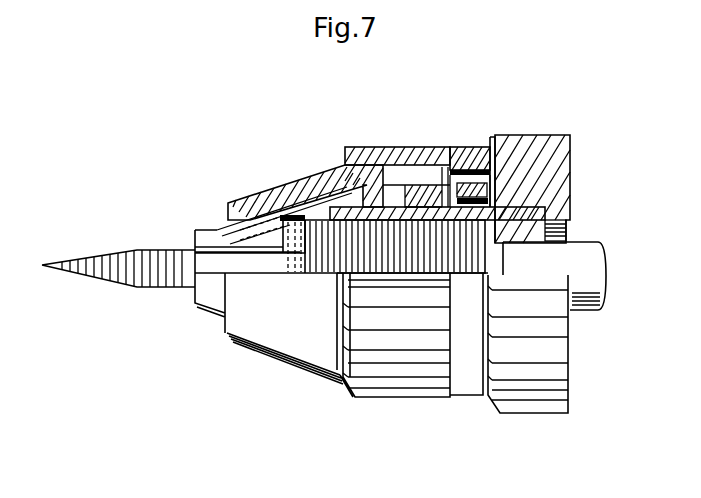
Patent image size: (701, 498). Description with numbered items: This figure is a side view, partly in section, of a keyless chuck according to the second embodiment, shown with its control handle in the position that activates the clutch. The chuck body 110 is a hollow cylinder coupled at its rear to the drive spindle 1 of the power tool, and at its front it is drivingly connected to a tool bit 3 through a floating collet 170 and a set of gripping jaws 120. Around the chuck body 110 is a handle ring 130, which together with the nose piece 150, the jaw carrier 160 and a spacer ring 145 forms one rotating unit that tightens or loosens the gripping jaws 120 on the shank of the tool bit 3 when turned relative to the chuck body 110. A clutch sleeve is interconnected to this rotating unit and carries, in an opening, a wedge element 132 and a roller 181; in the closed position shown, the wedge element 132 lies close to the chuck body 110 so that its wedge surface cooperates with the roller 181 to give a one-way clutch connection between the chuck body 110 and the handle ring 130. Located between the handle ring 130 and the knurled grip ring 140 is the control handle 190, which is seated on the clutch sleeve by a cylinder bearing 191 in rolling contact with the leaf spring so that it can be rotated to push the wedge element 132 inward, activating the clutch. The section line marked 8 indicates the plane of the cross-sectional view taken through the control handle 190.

The drive spindle 1 is at (593, 273).
The tool bit 3 is at (98, 280).
The section line 8- 8 is at (470, 70).
The chuck body 110 is at (483, 213).
The gripping jaws 120 is at (202, 310).
The handle ring 130 is at (387, 398).
The wedge element 132 is at (548, 163).
The grip ring 140 is at (532, 414).
The spacer ring 145 is at (400, 150).
The nose piece 150 is at (293, 363).
The jaw carrier 160 is at (327, 203).
The floating collet 170 is at (295, 268).
The roller 181 is at (497, 183).
The control handle 190 is at (463, 150).
The cylinder bearing 191 is at (487, 140).